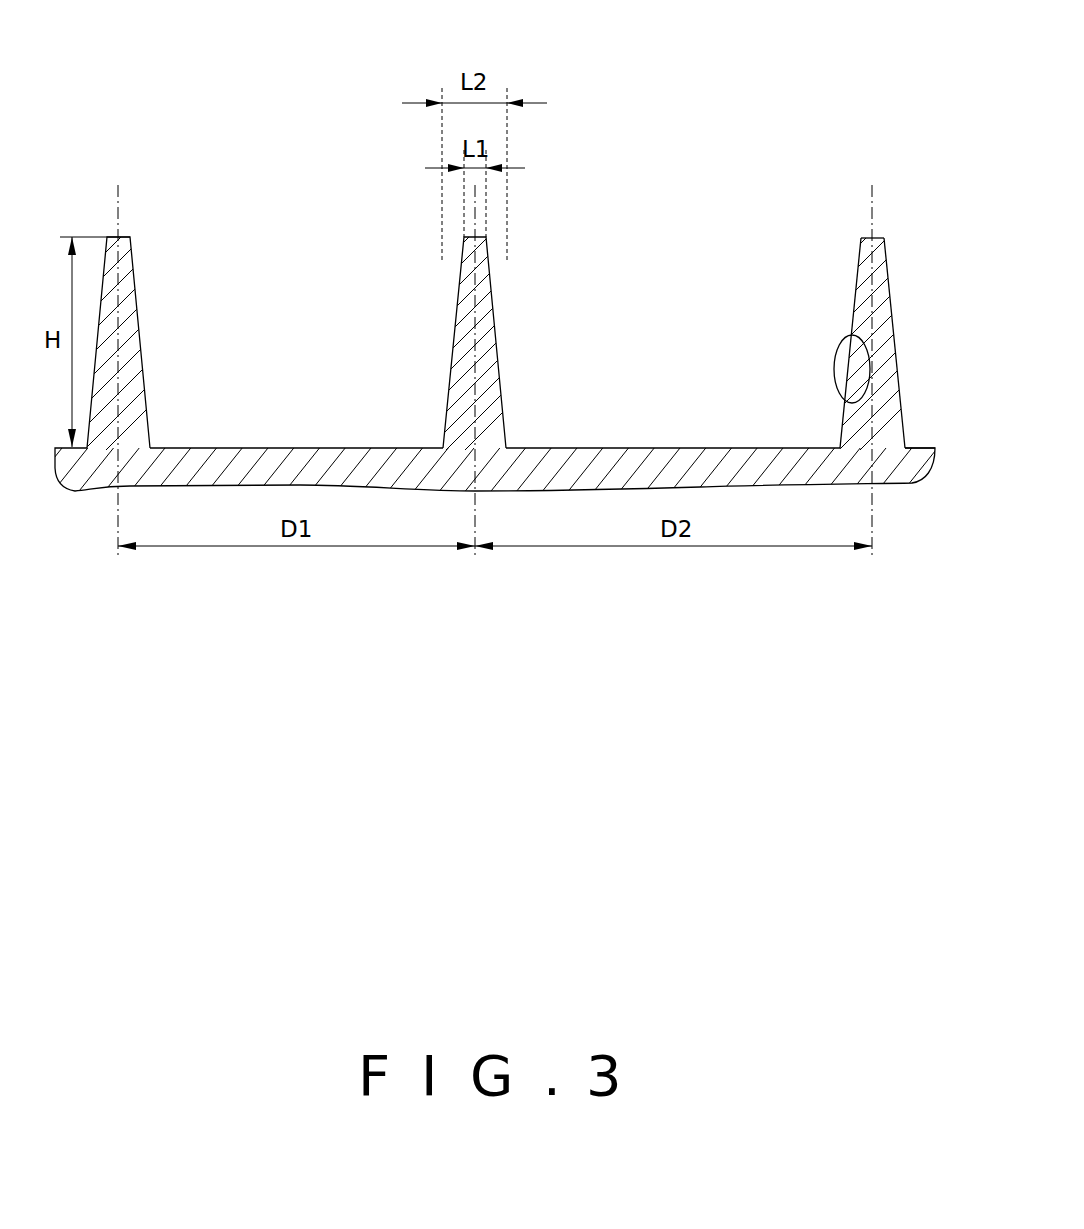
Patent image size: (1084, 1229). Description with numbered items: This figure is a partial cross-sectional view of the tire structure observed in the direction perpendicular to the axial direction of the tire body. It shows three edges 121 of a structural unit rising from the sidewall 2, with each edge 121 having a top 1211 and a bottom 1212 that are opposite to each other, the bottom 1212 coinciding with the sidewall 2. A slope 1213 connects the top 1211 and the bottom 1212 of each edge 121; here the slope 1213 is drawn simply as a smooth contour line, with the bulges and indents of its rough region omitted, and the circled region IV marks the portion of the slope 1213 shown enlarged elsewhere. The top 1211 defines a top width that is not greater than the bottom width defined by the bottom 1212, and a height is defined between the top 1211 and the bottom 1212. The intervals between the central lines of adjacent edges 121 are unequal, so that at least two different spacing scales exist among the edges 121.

The edge 121 is at (495, 288).
The top 1211 is at (884, 238).
The bottom 1212 is at (905, 440).
The slope 1213 is at (893, 332).
The sidewall 2 is at (911, 468).
The detail view region IV is at (834, 358).